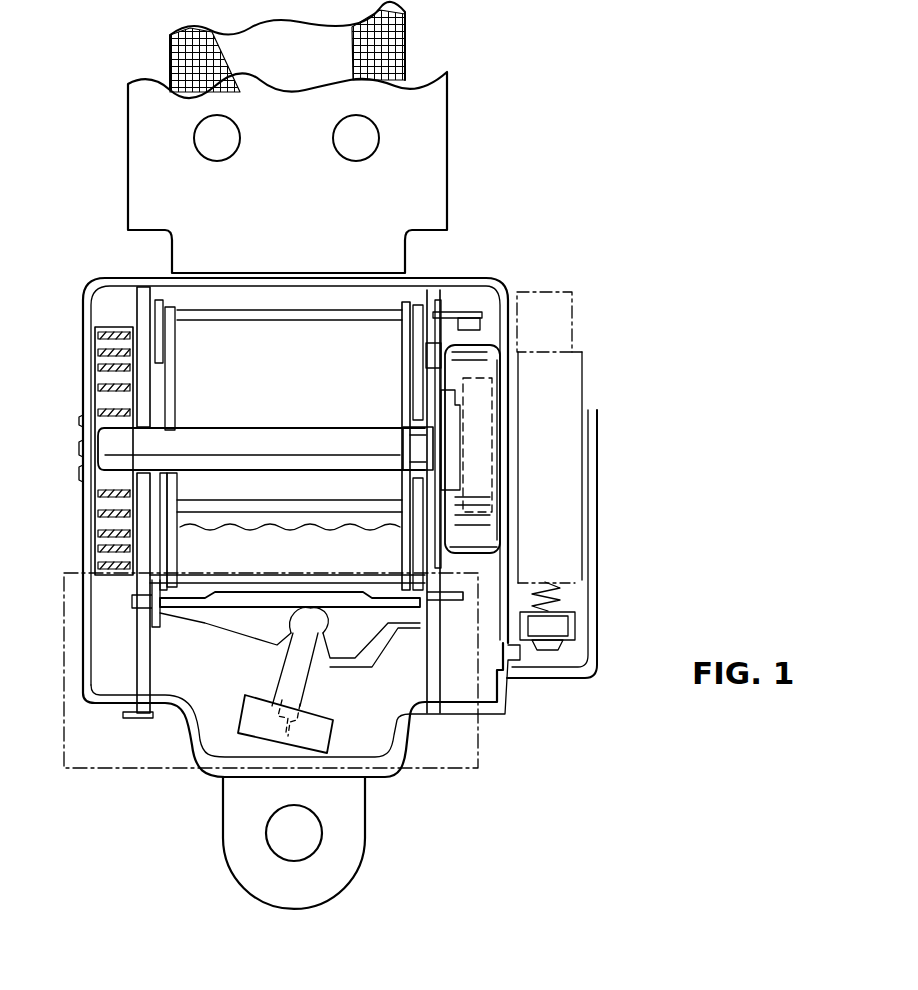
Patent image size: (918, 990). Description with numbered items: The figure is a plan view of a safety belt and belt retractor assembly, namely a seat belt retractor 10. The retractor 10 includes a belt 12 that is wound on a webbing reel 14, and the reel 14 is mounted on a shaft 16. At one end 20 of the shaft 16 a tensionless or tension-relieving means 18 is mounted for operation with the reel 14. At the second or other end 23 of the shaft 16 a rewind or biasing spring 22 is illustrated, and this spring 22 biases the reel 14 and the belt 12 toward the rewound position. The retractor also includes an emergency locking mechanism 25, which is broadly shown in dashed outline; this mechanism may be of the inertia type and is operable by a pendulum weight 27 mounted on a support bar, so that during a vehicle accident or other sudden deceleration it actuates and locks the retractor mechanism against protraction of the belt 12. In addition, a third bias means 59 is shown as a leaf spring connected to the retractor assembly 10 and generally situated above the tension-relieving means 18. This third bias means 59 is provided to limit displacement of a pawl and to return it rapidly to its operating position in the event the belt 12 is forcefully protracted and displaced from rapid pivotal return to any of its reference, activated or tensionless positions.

The seat belt retractor 10 is at (548, 195).
The belt 12 is at (405, 32).
The webbing reel 14 is at (168, 333).
The shaft 16 is at (128, 441).
The tension-relieving means 18 is at (488, 343).
The one end of shaft 20 is at (465, 440).
The spring 22 is at (118, 372).
The second end of shaft 23 is at (103, 476).
The emergency locking mechanism 25 is at (140, 770).
The pendulum weight 27 is at (318, 734).
The third bias means 59 is at (455, 310).